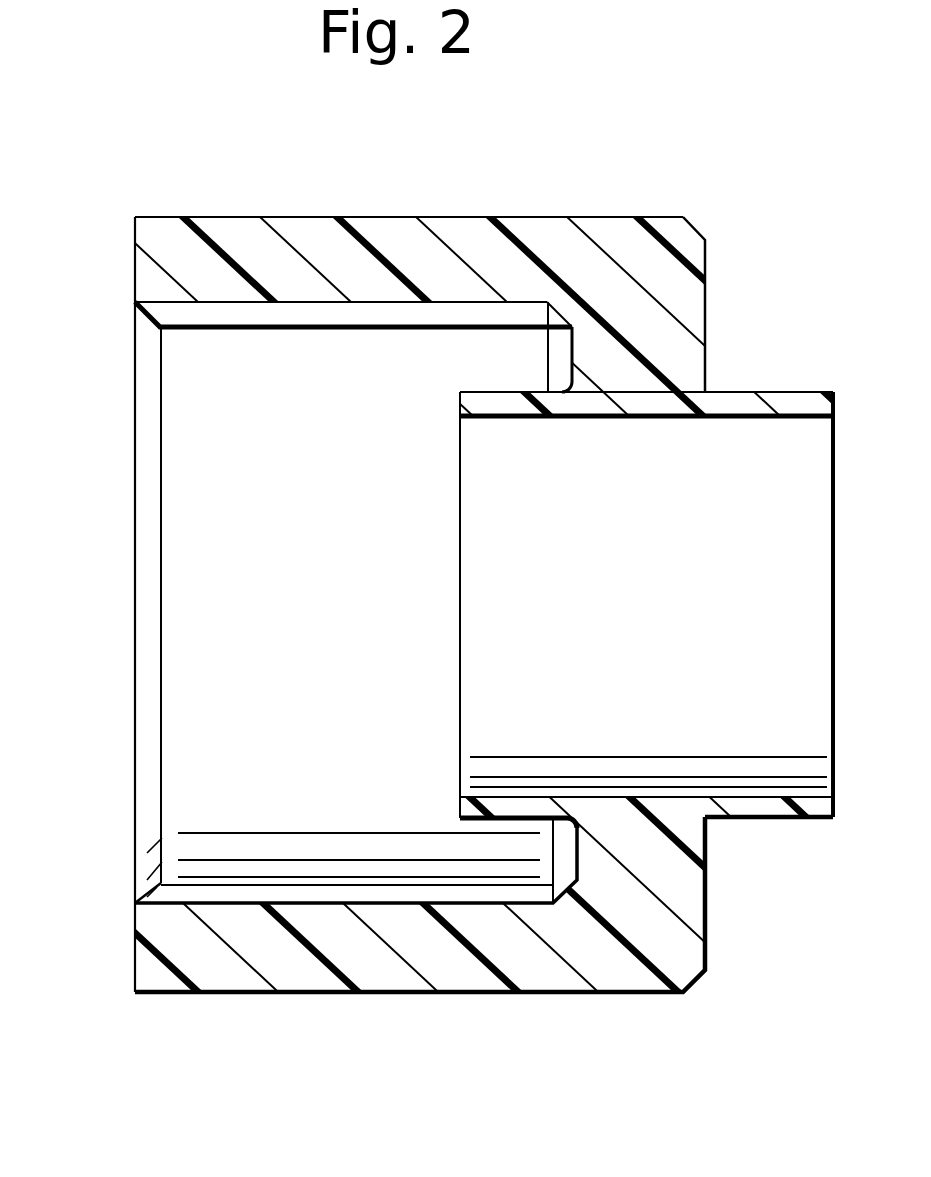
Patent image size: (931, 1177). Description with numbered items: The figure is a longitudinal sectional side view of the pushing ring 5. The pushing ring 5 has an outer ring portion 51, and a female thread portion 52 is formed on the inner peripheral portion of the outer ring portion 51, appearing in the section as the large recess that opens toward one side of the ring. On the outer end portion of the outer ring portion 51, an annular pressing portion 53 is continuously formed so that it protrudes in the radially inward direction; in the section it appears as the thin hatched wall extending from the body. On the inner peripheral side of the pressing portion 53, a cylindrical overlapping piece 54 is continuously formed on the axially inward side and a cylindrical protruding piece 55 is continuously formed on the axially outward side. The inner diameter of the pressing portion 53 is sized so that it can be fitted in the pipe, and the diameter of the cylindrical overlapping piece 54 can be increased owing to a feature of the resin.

The pushing ring 5 is at (600, 225).
The outer ring portion 51 is at (293, 225).
The female thread portion 52 is at (203, 318).
The annular pressing portion 53 is at (608, 377).
The cylindrical overlapping piece 54 is at (492, 398).
The cylindrical protruding piece 55 is at (793, 390).